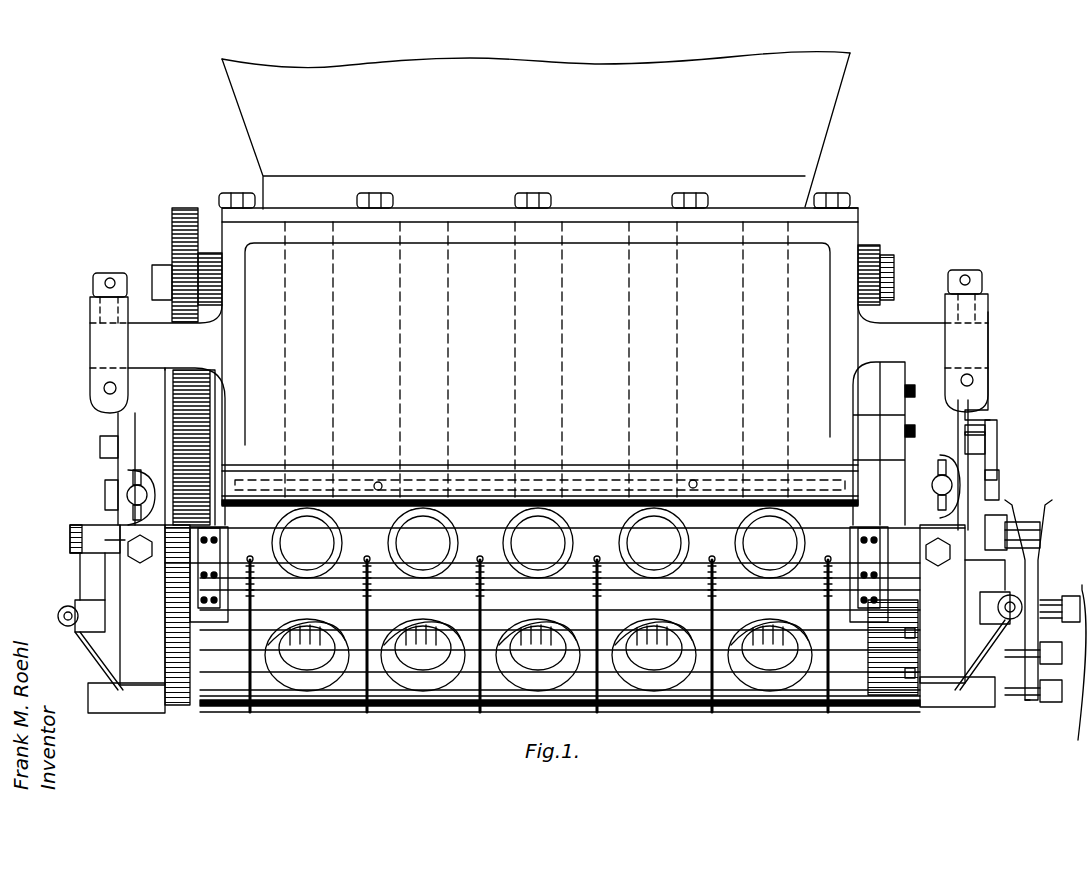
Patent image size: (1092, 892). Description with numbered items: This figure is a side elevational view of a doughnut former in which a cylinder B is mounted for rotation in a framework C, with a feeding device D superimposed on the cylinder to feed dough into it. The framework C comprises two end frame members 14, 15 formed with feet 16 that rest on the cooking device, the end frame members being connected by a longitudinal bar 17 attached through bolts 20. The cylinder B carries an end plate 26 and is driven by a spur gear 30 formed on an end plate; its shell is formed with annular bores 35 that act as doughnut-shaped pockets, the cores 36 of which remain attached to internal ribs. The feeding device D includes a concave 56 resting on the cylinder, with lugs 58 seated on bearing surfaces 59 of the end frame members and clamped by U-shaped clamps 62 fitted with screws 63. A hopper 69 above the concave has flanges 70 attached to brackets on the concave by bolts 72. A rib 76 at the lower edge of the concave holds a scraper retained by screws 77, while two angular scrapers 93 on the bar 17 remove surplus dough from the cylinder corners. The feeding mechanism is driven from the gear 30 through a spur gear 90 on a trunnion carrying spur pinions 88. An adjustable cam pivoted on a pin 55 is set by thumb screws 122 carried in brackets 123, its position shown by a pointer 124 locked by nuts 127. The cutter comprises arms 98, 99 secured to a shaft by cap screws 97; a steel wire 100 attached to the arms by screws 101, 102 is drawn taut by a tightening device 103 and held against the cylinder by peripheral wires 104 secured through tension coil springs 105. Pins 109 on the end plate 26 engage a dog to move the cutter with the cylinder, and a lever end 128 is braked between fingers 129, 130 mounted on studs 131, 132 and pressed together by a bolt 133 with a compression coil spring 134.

The hopper 69 is at (830, 88).
The bolts 72 is at (832, 198).
The flanges 70 is at (858, 210).
The feeding device D is at (838, 228).
The spur pinion 88 is at (207, 252).
The spur gear 90 is at (170, 212).
The lugs 58 is at (142, 325).
The screws 63 is at (92, 280).
The U-shaped clamps 62 is at (90, 312).
The bearing surfaces 59 is at (988, 360).
The concave 56 is at (455, 340).
The rib 76 is at (573, 470).
The screws 77 is at (376, 482).
The spur gear 30 is at (210, 430).
The end plate 26 is at (878, 400).
The end frame member 15 is at (118, 444).
The pointer 124 is at (110, 446).
The brackets 123 is at (128, 478).
The thumb screws 122 is at (105, 498).
The nuts 127 is at (70, 525).
The cap screws 97 is at (70, 535).
The framework C is at (985, 432).
The end frame member 14 is at (985, 448).
The pin 55 is at (1000, 440).
The finger 130 is at (1028, 485).
The finger 129 is at (1045, 500).
The lever end 128 is at (1040, 536).
The bolts 20 is at (137, 562).
The arm 99 is at (100, 590).
The arm 98 is at (975, 575).
The compression coil spring 134 is at (1055, 594).
The tightening device 103 is at (105, 630).
The feet 16 is at (118, 705).
The scrapers 93 is at (222, 622).
The screw 102 is at (178, 712).
The screw 101 is at (885, 705).
The pins 109 is at (915, 392).
The stud 132 is at (1055, 665).
The stud 131 is at (1058, 702).
The bolt 133 is at (1078, 742).
The cores 36 is at (300, 525).
The annular bores 35 is at (400, 512).
The longitudinal bar 17 is at (520, 548).
The tension coil springs 105 is at (710, 565).
The peripheral wires 104 is at (263, 710).
The steel wire 100 is at (392, 712).
The cylinder B is at (698, 706).